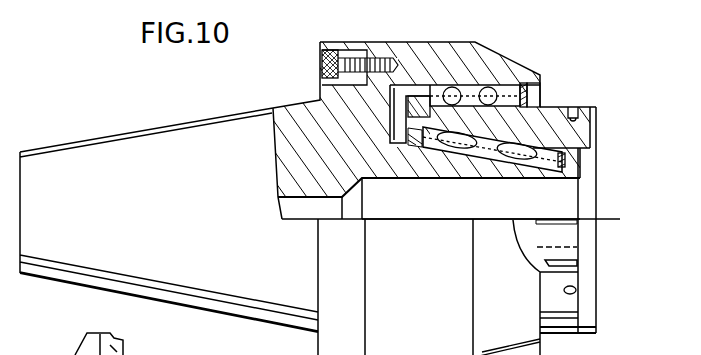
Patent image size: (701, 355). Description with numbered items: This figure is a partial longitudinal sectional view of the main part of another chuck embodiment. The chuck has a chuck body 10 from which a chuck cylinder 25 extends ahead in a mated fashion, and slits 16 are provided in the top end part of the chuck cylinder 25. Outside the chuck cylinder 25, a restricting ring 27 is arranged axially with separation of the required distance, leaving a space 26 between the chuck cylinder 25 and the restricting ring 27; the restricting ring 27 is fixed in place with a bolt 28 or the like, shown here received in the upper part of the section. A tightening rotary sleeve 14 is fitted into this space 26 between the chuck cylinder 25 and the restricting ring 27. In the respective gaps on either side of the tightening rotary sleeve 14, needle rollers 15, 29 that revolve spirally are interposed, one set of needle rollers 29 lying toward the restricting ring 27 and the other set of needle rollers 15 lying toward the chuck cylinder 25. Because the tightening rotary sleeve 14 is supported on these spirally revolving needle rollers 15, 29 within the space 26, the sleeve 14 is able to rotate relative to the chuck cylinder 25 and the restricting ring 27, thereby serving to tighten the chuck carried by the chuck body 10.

The chuck body 10 is at (333, 101).
The tightening rotary sleeve 14 is at (557, 118).
The needle rollers 15 is at (538, 143).
The slits 16 is at (567, 173).
The chuck cylinder 25 is at (458, 162).
The space 26 is at (398, 97).
The restricting ring 27 is at (465, 53).
The bolt 28 is at (348, 56).
The needle rollers 29 is at (484, 78).